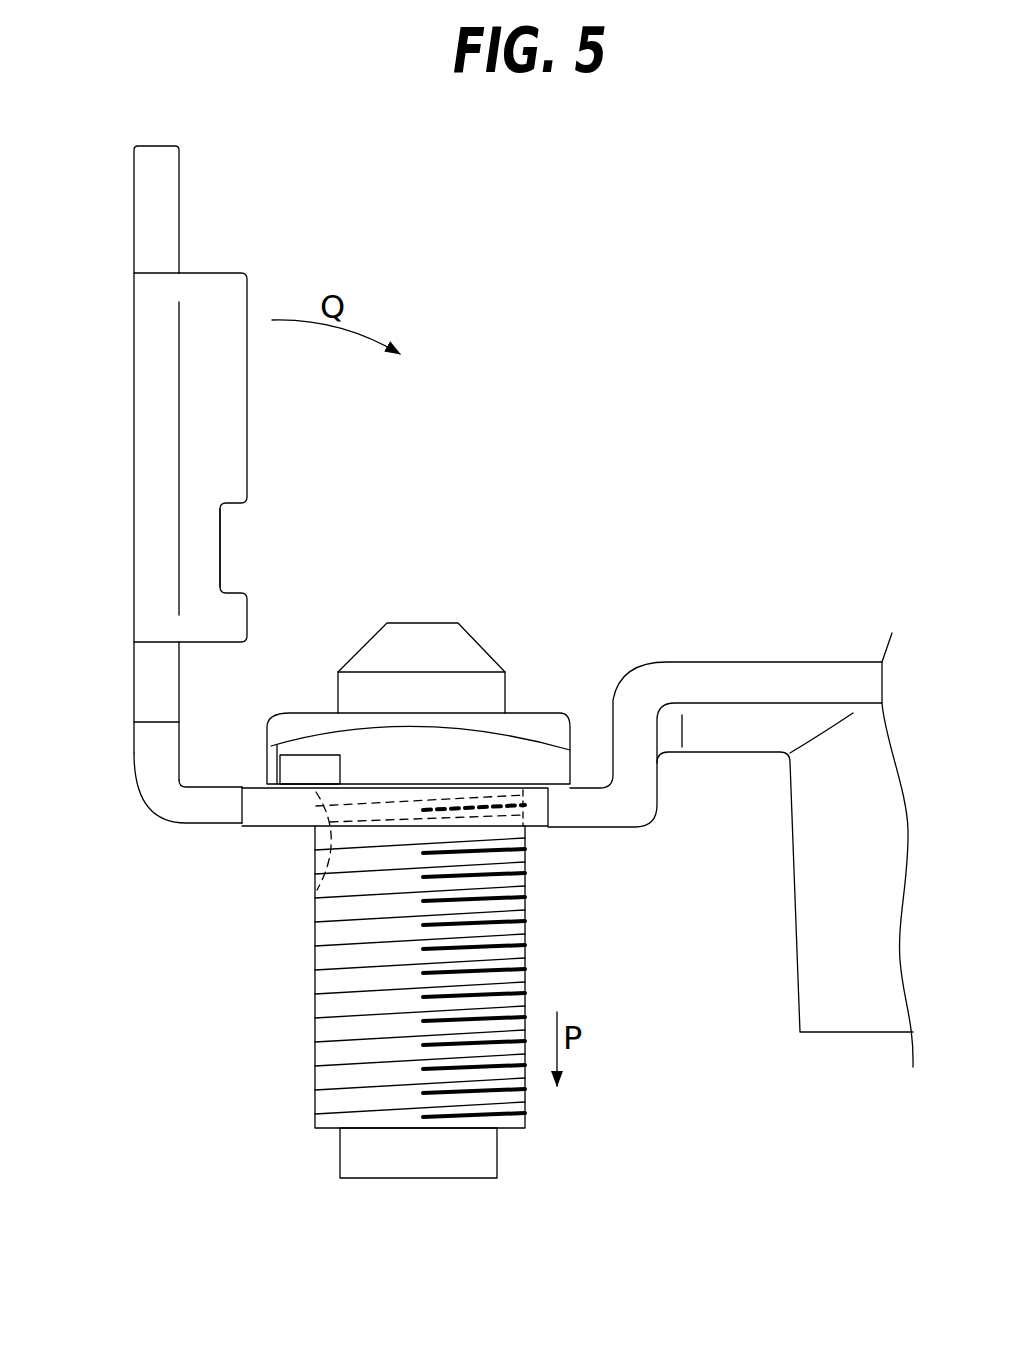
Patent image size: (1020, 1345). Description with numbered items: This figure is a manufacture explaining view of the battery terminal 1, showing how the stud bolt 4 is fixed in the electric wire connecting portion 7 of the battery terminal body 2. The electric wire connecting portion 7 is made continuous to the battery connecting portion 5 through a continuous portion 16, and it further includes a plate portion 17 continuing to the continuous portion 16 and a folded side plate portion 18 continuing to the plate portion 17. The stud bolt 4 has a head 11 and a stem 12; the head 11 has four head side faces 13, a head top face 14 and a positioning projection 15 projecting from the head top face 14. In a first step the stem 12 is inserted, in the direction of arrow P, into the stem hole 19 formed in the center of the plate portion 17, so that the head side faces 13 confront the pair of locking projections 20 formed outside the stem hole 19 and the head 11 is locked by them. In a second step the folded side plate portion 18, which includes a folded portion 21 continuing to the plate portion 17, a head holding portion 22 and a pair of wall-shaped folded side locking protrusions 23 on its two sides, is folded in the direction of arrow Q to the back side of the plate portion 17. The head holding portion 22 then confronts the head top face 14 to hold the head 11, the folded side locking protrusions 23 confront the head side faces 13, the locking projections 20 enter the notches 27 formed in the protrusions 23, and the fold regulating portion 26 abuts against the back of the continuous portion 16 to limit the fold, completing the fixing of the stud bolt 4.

The battery terminal 1 is at (628, 432).
The battery terminal body 2 is at (840, 1036).
The stud bolt 4 is at (338, 1154).
The battery connecting portion 5 is at (818, 928).
The electric wire connecting portion 7 is at (583, 607).
The head 11 is at (552, 713).
The stem 12 is at (338, 1028).
The head side faces 13 is at (532, 763).
The head top face 14 is at (510, 712).
The positioning projection 15 is at (430, 626).
The continuous portion 16 is at (705, 733).
The plate portion 17 is at (270, 812).
The folded side plate portion 18 is at (132, 513).
The stem hole 19 is at (313, 900).
The locking projections 20 is at (307, 768).
The folded portion 21 is at (148, 752).
The head holding portion 22 is at (140, 408).
The folded side locking protrusions 23 is at (230, 427).
The fold regulating portion 26 is at (160, 215).
The notches 27 is at (221, 543).